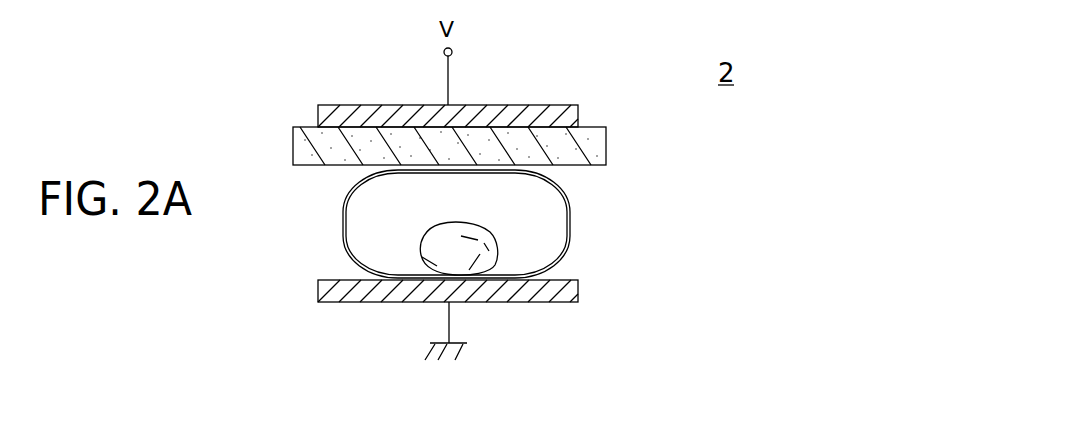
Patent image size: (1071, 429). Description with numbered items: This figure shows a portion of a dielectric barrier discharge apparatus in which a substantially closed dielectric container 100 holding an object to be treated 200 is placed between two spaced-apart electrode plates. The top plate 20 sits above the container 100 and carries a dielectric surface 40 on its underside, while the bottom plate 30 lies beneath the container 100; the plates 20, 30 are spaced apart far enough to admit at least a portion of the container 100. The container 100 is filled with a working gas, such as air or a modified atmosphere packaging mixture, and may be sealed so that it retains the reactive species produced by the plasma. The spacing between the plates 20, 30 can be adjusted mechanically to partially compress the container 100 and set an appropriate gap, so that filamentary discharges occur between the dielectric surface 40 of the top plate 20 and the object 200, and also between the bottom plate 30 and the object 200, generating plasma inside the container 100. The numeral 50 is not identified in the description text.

The top plate 20 is at (498, 105).
The dielectric surface 40 is at (598, 127).
The droplet 50 is at (322, 231).
The object to be treated 200 is at (473, 223).
The dielectric container 100 is at (565, 248).
The bottom plate 30 is at (336, 302).